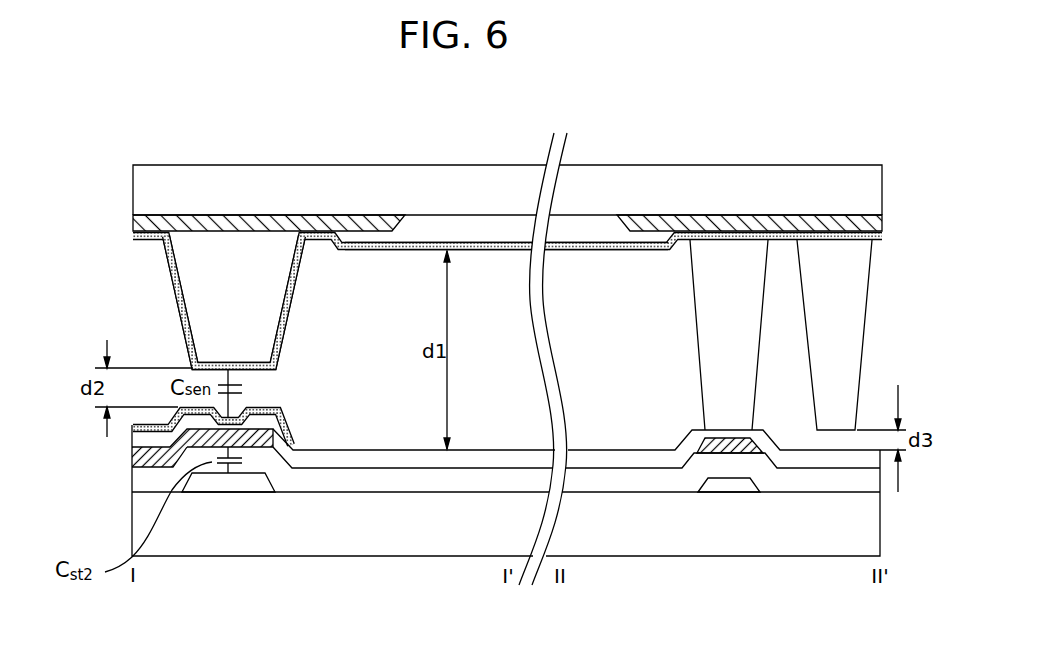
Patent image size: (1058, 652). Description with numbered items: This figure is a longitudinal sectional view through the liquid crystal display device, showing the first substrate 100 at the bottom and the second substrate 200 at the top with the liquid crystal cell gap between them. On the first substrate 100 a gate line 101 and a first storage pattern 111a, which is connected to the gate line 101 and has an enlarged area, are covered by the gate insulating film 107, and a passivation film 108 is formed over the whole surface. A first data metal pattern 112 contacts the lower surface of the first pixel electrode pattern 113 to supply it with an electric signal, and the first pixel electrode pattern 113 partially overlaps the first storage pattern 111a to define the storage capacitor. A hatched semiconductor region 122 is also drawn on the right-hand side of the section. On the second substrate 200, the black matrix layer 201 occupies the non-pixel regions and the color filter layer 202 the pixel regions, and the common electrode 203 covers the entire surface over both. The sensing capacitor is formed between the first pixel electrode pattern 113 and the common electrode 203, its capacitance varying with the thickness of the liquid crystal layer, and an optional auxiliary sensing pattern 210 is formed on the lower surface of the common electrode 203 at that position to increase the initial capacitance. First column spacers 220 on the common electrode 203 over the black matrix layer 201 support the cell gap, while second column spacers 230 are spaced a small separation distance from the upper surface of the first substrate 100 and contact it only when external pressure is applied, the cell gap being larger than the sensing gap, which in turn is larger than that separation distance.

The first substrate 100 is at (812, 540).
The gate line 101 is at (728, 483).
The gate insulating film 107 is at (352, 482).
The passivation film 108 is at (605, 445).
The first storage pattern 111a is at (232, 482).
The first data metal pattern 112 is at (143, 458).
The first pixel electrode pattern 113 is at (132, 432).
The semiconductor layer 122 is at (725, 440).
The second substrate 200 is at (808, 180).
The black matrix layer 201 is at (290, 218).
The color filter layer 202 is at (603, 250).
The common electrode 203 is at (883, 235).
The auxiliary sensing pattern 210 is at (193, 270).
The first column spacers 220 is at (712, 320).
The second column spacers 230 is at (855, 305).